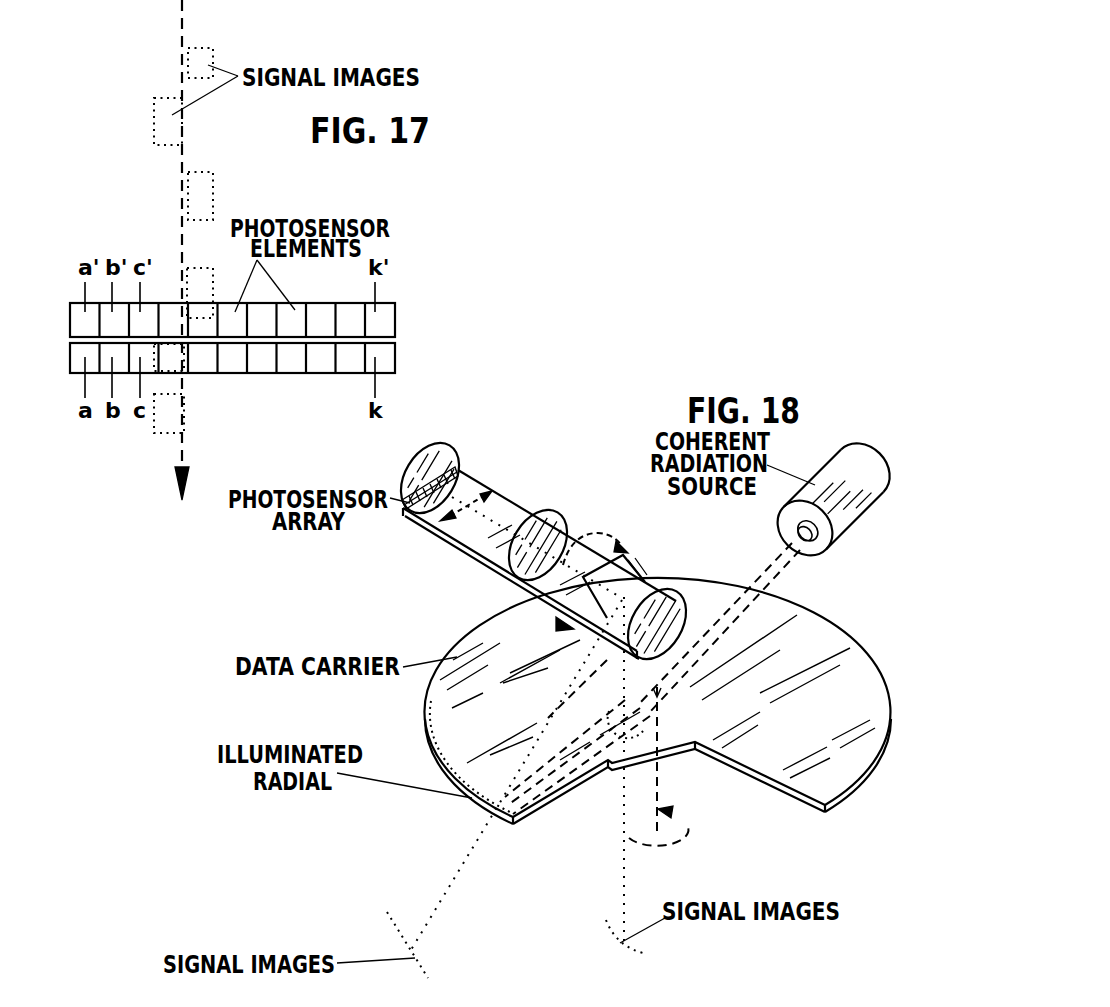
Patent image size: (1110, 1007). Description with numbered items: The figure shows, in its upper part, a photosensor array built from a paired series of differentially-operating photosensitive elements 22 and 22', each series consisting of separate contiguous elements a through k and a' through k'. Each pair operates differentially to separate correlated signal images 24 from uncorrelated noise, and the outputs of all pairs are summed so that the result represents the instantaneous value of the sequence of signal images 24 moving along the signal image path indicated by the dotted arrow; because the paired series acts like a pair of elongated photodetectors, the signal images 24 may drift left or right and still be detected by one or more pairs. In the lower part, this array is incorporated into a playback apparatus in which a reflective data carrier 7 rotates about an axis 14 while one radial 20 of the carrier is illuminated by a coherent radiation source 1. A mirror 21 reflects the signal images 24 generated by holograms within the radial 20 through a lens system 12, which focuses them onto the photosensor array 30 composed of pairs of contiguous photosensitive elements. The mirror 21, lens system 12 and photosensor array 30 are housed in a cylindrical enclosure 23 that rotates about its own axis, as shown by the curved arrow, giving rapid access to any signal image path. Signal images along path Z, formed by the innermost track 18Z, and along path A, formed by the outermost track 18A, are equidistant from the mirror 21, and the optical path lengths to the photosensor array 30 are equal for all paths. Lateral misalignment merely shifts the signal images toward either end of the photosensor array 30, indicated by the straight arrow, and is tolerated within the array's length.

In FIG. 18, the coherent radiation source 1 is at (852, 512).
In FIG. 18, the data carrier 7 is at (810, 795).
In FIG. 18, the lens system 12 is at (553, 523).
In FIG. 18, the axis 14 is at (657, 770).
In FIG. 18, the outermost track 18A is at (453, 763).
In FIG. 18, the innermost track 18Z is at (648, 737).
In FIG. 18, the radial 20 is at (562, 767).
In FIG. 18, the mirror 21 is at (623, 558).
In FIG. 17, the photosensitive elements 22 is at (212, 379).
In FIG. 17, the photosensitive elements 22' is at (212, 303).
In FIG. 18, the cylindrical enclosure 23 is at (483, 557).
In FIG. 17, the signal images 24 is at (163, 123).
In FIG. 18, the signal images 24 is at (413, 950).
In FIG. 18, the photosensor array 30 is at (458, 470).